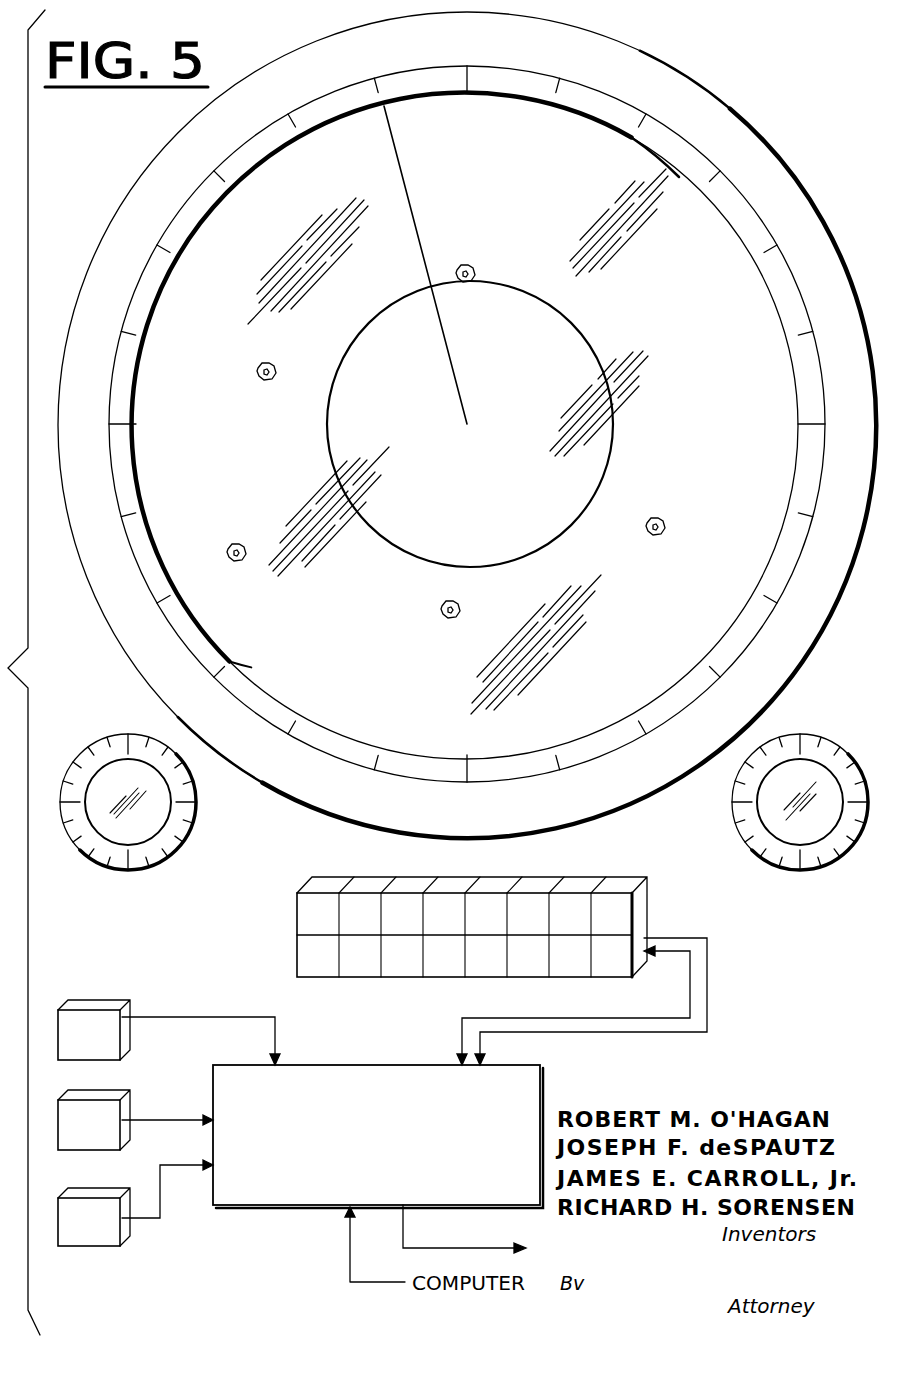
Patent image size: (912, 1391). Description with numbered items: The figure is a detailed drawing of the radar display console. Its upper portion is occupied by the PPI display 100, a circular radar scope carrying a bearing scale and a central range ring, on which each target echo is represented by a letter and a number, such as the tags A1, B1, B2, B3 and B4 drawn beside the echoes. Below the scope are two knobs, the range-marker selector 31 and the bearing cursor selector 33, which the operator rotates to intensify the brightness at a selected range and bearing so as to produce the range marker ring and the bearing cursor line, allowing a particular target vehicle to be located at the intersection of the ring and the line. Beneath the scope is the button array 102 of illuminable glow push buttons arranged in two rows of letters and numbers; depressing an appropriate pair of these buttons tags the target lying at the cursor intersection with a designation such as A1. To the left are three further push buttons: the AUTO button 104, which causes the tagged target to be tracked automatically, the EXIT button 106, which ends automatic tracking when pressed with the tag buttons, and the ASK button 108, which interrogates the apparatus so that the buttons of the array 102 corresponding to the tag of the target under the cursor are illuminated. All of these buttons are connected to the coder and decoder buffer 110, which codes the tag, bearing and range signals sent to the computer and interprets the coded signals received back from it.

The PPI display 100 is at (118, 660).
The button array 102 is at (492, 876).
The AUTO button 104 is at (122, 1012).
The EXIT button 106 is at (128, 1104).
The ASK button 108 is at (128, 1238).
The coder/decoder buffer 110 is at (394, 1162).
The range-marker selector 31 is at (746, 848).
The bearing cursor selector 33 is at (73, 845).
The target vehicle tag A1 is at (463, 264).
The target vehicle tag B1 is at (654, 514).
The target vehicle tag B2 is at (263, 358).
The target vehicle tag B3 is at (234, 540).
The target vehicle tag B4 is at (449, 597).